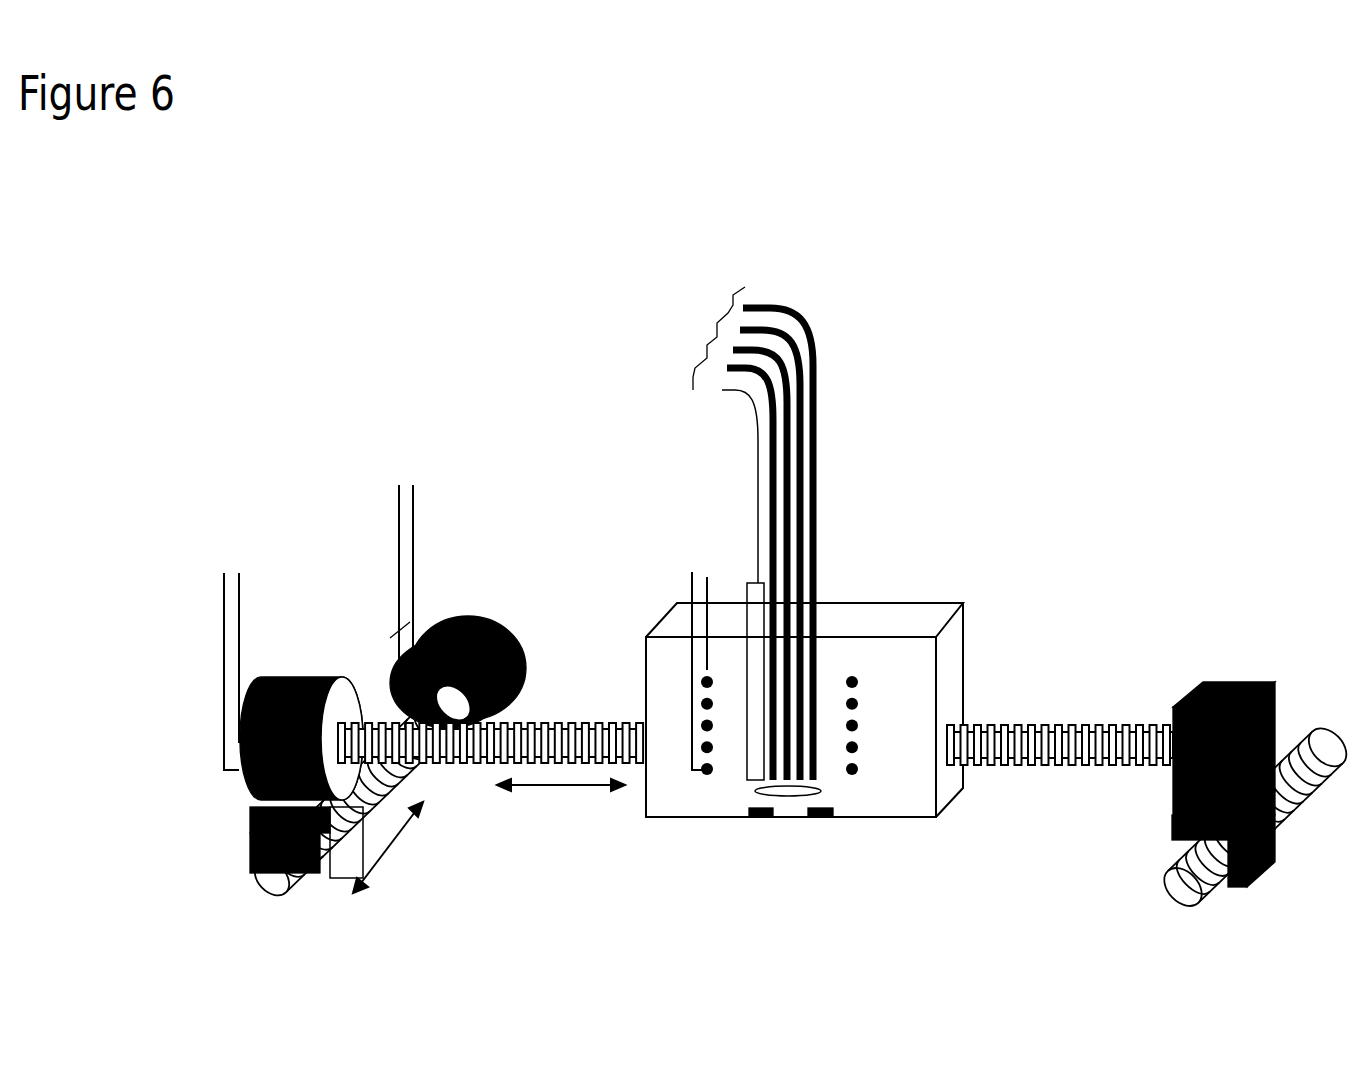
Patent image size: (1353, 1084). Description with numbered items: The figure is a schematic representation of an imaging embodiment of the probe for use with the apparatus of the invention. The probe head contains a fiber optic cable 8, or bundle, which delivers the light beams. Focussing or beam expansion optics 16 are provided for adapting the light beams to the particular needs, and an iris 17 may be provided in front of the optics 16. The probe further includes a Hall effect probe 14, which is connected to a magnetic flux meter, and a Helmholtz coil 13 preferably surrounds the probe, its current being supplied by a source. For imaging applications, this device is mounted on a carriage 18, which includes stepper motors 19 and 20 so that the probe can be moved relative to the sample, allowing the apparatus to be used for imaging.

The fiber optic cable 8 is at (769, 533).
The Helmholtz coil 13 is at (853, 660).
The Hall effect probe 14 is at (743, 585).
The focussing or beam expansion optics 16 is at (807, 793).
The iris 17 is at (770, 805).
The carriage 18 is at (730, 716).
The stepper motor 19 is at (293, 725).
The stepper motor 20 is at (458, 606).